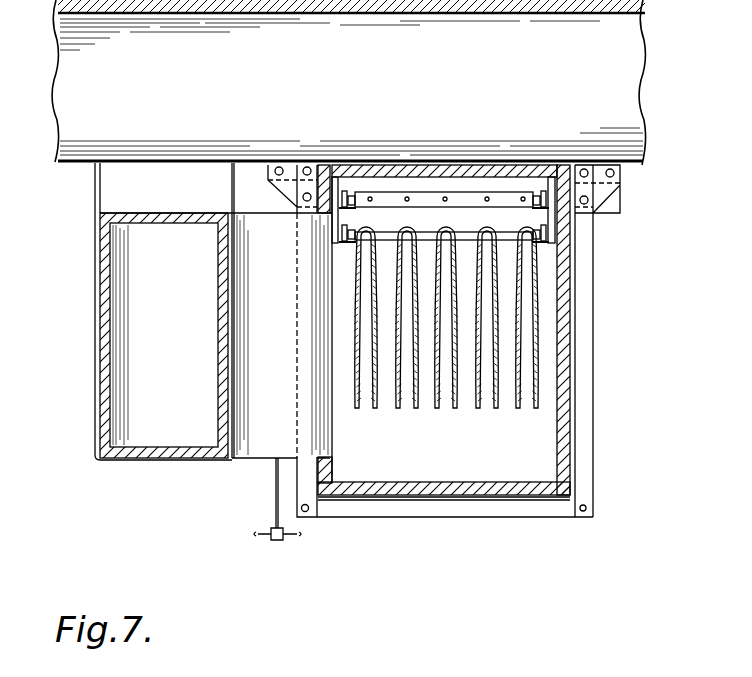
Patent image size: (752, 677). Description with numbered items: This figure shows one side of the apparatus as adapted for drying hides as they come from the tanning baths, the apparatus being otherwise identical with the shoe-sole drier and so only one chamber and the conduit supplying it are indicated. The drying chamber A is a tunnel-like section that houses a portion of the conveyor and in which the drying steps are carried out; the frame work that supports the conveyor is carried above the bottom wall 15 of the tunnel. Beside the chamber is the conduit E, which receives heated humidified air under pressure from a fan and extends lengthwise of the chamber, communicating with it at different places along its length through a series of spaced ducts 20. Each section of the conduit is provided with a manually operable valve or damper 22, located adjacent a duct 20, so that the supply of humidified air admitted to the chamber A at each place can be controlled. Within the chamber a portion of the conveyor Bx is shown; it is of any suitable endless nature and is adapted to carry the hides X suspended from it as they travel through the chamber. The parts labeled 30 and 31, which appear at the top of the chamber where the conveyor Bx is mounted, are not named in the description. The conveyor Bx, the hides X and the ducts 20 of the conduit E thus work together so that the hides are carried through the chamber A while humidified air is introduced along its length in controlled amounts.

The clip 30 is at (352, 196).
The bar 31 is at (462, 220).
The bottom wall of the tunnel 15 is at (450, 490).
The duct 20 is at (253, 440).
The manually operable valve or damper 22 is at (273, 470).
The conduit E is at (107, 325).
The drying chamber A is at (565, 352).
The conveyor Bx is at (602, 222).
The hides X is at (377, 408).